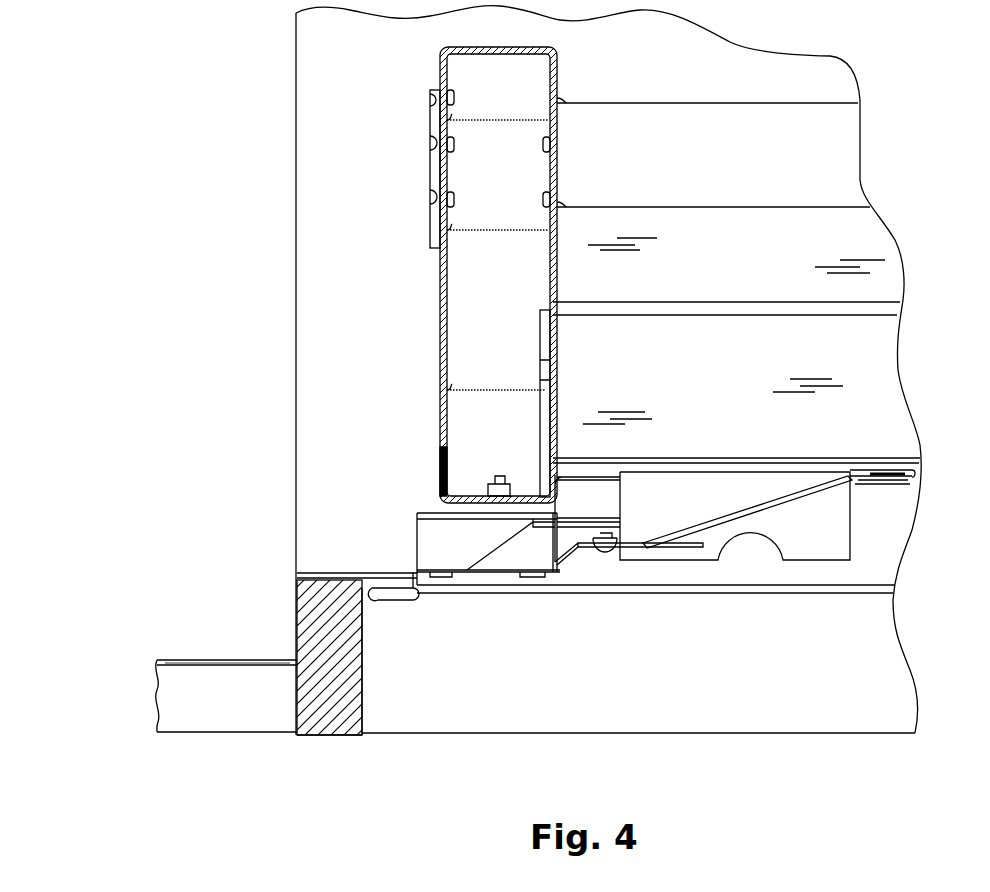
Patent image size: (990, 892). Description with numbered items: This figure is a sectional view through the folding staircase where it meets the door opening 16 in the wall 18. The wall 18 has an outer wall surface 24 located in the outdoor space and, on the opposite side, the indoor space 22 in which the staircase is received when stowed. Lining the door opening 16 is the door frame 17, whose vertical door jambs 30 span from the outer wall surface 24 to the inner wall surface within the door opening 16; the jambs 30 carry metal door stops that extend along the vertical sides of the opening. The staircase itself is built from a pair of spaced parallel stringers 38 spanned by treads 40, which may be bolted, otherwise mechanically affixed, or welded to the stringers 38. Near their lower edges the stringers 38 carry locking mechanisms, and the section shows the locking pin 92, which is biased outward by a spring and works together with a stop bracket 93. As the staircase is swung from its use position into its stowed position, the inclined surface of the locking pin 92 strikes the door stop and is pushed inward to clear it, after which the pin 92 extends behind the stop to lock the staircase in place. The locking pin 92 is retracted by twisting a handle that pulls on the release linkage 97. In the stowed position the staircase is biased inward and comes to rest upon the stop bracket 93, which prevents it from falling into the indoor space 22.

The door opening 16 is at (764, 682).
The door frame 17 is at (316, 618).
The wall 18 is at (175, 694).
The indoor space 22 is at (388, 262).
The outer wall surface 24 is at (232, 710).
The door jamb 30 is at (365, 703).
The stringer 38 is at (468, 328).
The tread 40 is at (833, 157).
The locking pin 92 is at (405, 558).
The stop bracket 93 is at (393, 598).
The release linkage 97 is at (803, 497).